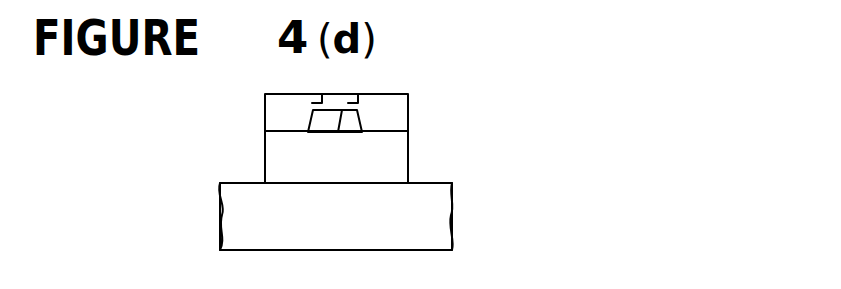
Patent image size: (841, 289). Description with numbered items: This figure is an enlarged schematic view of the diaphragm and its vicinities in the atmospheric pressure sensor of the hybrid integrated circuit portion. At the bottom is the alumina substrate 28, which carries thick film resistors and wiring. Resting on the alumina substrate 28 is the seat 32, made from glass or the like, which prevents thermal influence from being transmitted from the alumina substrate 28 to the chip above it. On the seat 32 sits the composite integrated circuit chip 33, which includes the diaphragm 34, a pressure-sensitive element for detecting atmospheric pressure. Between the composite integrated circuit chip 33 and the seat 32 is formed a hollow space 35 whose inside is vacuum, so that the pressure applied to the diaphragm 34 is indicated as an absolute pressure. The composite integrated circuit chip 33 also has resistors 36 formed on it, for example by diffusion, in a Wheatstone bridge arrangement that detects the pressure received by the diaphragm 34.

The alumina substrate 28 is at (418, 213).
The seat 32 is at (408, 158).
The composite integrated circuit chip 33 is at (408, 110).
The diaphragm 34 is at (328, 104).
The hollow space 35 is at (343, 125).
The resistors 36 is at (360, 93).